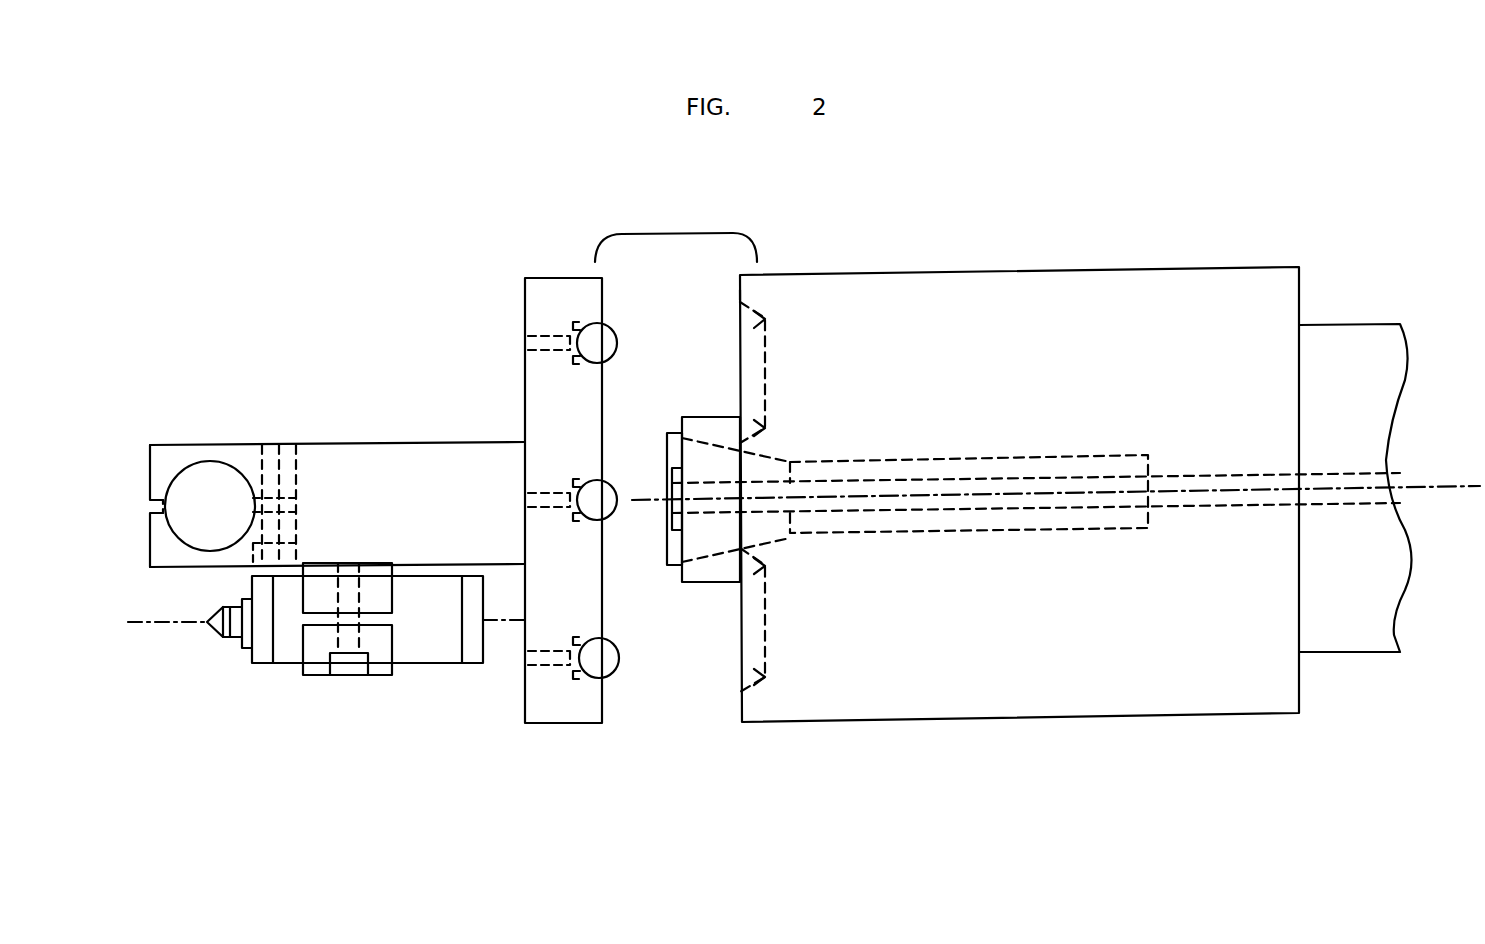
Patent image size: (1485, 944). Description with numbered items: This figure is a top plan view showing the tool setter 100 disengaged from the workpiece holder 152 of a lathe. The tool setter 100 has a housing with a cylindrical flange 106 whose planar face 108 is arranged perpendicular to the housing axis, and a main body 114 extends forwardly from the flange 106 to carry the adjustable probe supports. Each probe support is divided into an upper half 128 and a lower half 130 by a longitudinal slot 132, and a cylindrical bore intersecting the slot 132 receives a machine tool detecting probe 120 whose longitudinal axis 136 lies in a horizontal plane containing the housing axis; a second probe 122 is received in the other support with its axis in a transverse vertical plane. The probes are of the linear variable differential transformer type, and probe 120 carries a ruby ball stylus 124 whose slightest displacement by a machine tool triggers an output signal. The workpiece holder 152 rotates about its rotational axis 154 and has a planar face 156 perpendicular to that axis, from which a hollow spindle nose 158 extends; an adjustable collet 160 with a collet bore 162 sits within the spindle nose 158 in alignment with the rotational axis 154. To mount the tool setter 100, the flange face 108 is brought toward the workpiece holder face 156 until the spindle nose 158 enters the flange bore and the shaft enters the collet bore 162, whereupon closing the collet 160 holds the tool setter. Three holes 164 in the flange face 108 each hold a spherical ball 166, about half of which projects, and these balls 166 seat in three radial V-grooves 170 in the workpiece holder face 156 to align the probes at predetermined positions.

The tool setter 100 is at (231, 423).
The cylindrical flange 106 is at (556, 276).
The planar face 108 is at (603, 284).
The main body 114 is at (422, 452).
The machine tool detecting probe 120 is at (440, 641).
The machine tool detecting probe 122 is at (233, 478).
The ruby ball stylus 124 is at (211, 628).
The upper half 128 is at (166, 550).
The lower half 130 is at (157, 457).
The longitudinal slot 132 is at (160, 507).
The longitudinal axis 136 is at (176, 623).
The workpiece holder 152 is at (993, 272).
The rotational axis 154 is at (1425, 482).
The planar face 156 is at (737, 290).
The hollow spindle nose 158 is at (703, 417).
The adjustable collet 160 is at (676, 432).
The collet bore 162 is at (670, 525).
The hole 164 is at (573, 326).
The spherical ball 166 is at (612, 334).
The radial V-groove 170 is at (770, 372).